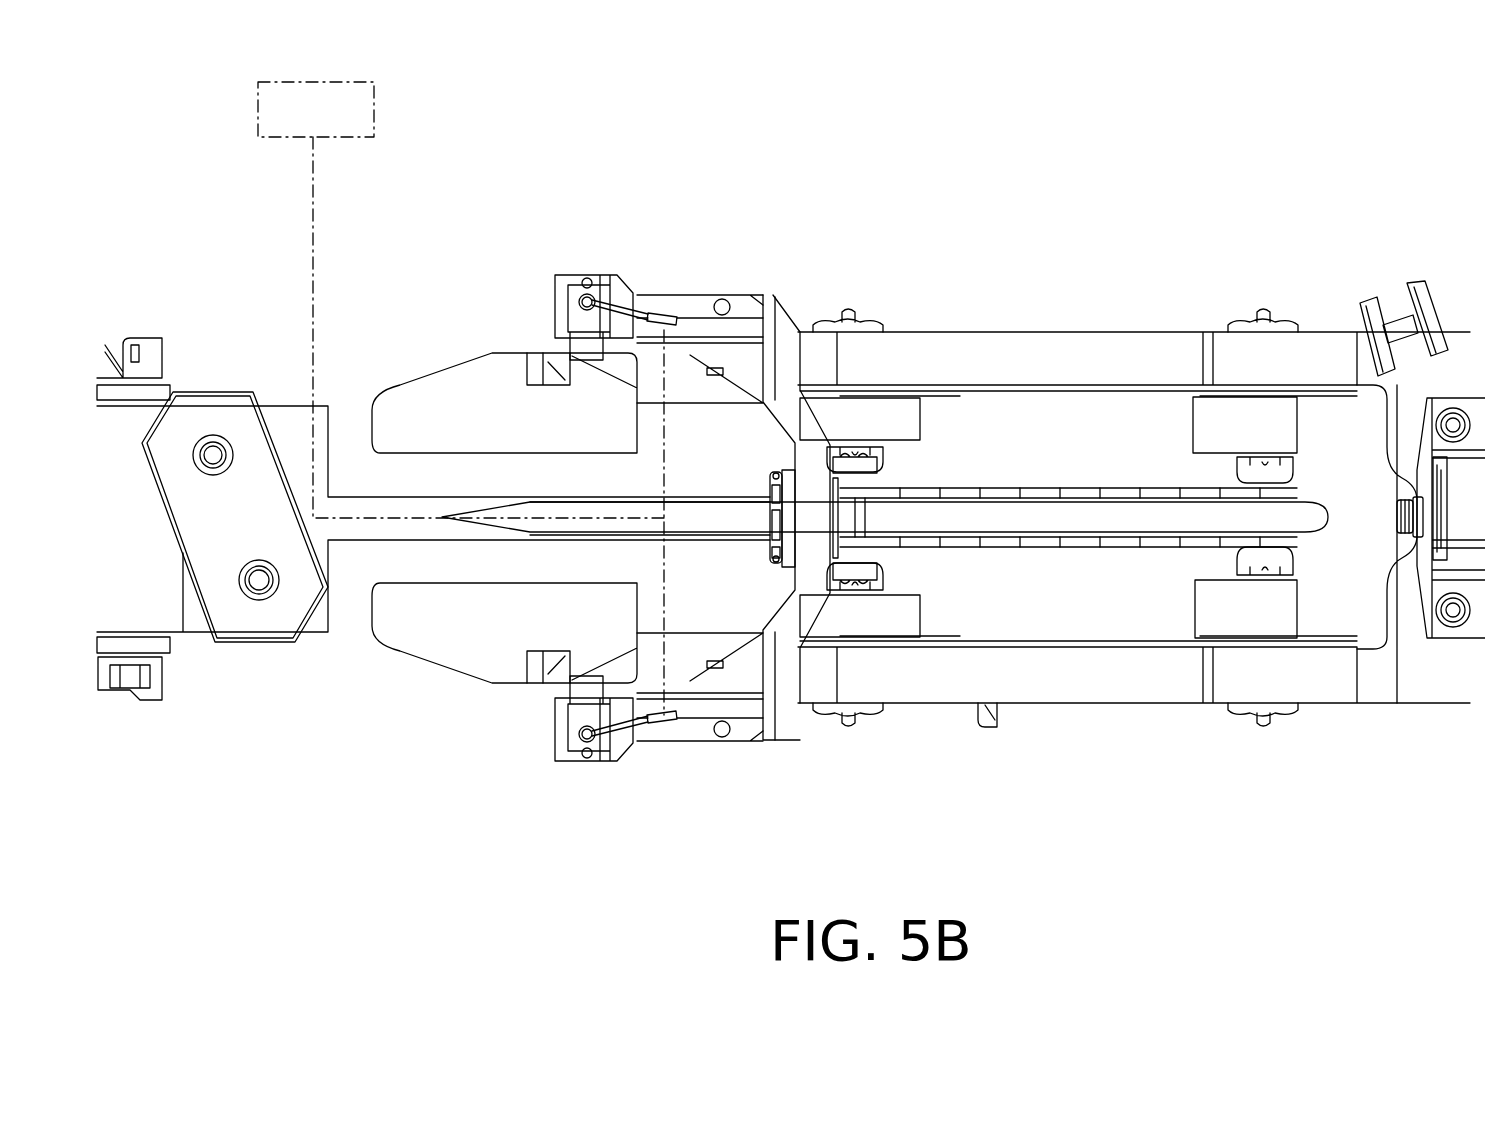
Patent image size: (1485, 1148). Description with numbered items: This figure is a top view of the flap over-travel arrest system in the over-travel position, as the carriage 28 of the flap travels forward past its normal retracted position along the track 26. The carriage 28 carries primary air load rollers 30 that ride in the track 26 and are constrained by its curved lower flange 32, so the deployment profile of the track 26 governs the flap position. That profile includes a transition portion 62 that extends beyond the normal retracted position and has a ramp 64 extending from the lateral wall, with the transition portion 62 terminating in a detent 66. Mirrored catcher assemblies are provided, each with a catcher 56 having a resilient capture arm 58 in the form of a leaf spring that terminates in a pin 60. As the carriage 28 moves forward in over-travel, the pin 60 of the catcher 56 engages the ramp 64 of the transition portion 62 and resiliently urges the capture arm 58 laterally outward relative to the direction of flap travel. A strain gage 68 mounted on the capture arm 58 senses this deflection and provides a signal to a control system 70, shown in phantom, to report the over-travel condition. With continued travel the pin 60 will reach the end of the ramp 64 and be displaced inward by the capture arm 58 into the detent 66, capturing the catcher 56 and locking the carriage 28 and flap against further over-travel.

The control system 70 is at (336, 103).
The catcher 56 is at (627, 340).
The ramp 64 is at (655, 318).
The pin 60 is at (593, 335).
The detent 66 is at (543, 350).
The transition portion 62 is at (607, 387).
The capture arm 58 is at (677, 318).
The track 26 is at (763, 510).
The lower flange 32 is at (1058, 432).
The primary air load rollers 30 is at (920, 422).
The carriage 28 is at (1153, 693).
The strain gage 68 is at (657, 322).